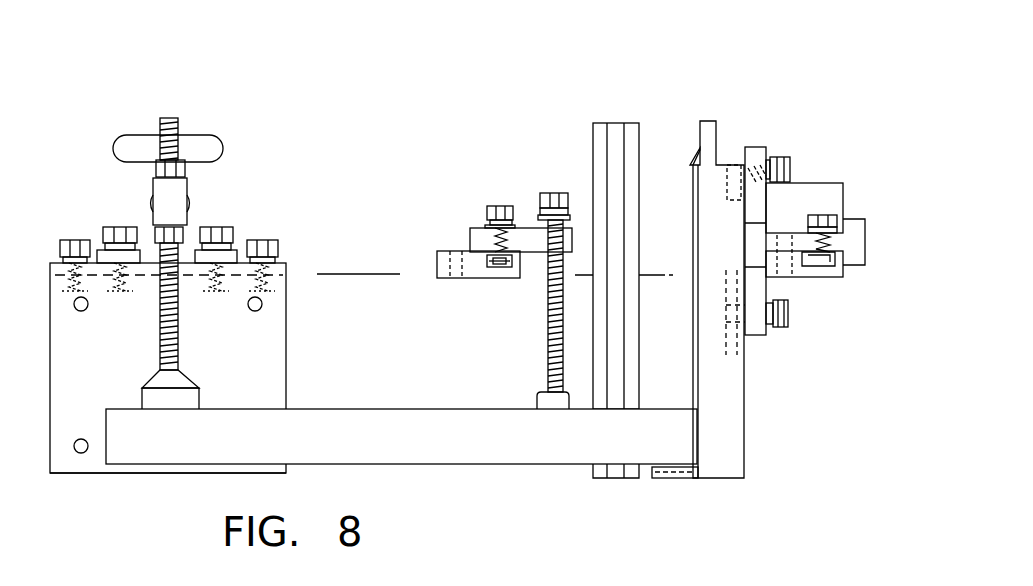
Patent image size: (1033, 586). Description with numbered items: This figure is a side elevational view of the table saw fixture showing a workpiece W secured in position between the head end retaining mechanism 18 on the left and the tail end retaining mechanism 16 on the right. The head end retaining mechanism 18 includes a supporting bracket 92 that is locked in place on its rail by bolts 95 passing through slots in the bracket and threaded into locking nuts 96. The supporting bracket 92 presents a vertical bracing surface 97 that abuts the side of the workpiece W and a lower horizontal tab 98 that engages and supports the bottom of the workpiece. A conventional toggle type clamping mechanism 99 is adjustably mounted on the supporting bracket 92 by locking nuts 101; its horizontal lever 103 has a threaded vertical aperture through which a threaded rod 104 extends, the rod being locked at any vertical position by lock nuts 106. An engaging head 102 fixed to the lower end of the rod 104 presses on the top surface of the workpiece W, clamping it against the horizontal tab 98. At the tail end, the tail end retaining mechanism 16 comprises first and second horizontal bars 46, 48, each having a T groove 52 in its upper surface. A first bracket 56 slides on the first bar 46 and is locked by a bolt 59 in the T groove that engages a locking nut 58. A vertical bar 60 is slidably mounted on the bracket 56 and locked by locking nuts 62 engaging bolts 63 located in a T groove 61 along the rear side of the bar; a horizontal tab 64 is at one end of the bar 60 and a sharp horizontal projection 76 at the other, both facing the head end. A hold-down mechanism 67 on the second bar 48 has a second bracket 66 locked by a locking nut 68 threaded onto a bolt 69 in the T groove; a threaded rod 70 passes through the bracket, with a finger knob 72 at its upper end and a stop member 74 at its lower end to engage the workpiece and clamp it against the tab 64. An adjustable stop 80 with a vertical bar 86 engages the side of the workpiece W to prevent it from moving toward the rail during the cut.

The tail end retaining mechanism 16 is at (758, 68).
The head end retaining mechanism 18 is at (108, 123).
The first horizontal bar 46 is at (810, 277).
The second horizontal bar 48 is at (443, 250).
The T groove 52 is at (502, 268).
The first bracket 56 is at (755, 147).
The locking nut 58 is at (822, 214).
The bolt 59 is at (820, 263).
The vertical bar 60 is at (712, 121).
The T groove 61 is at (740, 202).
The locking nuts 62 is at (785, 163).
The bolts 63 is at (736, 158).
The horizontal tab 64 is at (683, 477).
The second bracket 66 is at (473, 230).
The hold-down mechanism 67 is at (527, 162).
The locking nut 68 is at (495, 207).
The bolt 69 is at (493, 262).
The threaded rod 70 is at (547, 352).
The finger knob 72 is at (548, 196).
The stop member 74 is at (540, 398).
The sharp horizontal projection 76 is at (677, 130).
The adjustable stop 80 is at (629, 92).
The vertical bar 86 is at (598, 122).
The supporting bracket 92 is at (288, 304).
The bolts 95 is at (68, 240).
The locking nuts 96 is at (276, 238).
The vertical bracing surface 97 is at (112, 369).
The lower horizontal tab 98 is at (163, 470).
The toggle type clamping mechanism 99 is at (205, 119).
The locking nuts 101 is at (117, 240).
The engaging head 102 is at (193, 392).
The horizontal lever 103 is at (162, 193).
The threaded rod 104 is at (173, 329).
The lock nuts 106 is at (186, 167).
The workpiece W is at (352, 452).